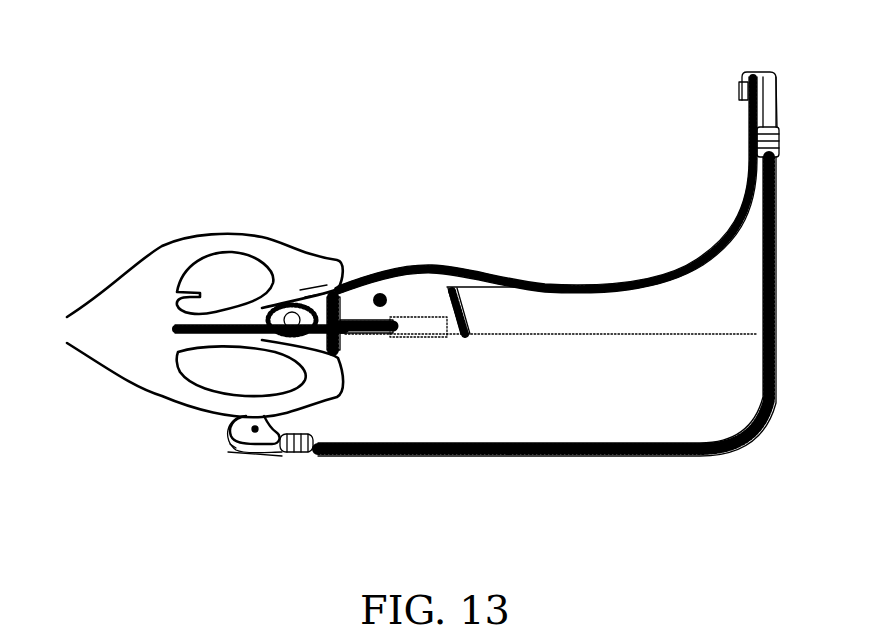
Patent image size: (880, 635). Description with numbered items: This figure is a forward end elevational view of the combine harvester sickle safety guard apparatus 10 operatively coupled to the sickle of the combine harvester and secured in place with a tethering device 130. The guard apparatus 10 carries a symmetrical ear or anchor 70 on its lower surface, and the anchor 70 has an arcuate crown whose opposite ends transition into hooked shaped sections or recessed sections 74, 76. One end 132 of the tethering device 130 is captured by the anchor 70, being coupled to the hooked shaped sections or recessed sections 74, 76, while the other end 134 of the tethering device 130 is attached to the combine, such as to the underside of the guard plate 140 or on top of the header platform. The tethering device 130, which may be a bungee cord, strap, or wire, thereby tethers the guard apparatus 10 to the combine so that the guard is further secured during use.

The combine harvester sickle safety guard apparatus 10 is at (156, 215).
The symmetrical ear or anchor 70 is at (231, 470).
The hooked shaped section or recessed section 74 is at (228, 448).
The hooked shaped section or recessed section 76 is at (276, 430).
The tethering device 130 is at (488, 446).
The end of tethering device 132 is at (229, 443).
The other end of tethering device 134 is at (742, 87).
The guard plate 140 is at (677, 268).